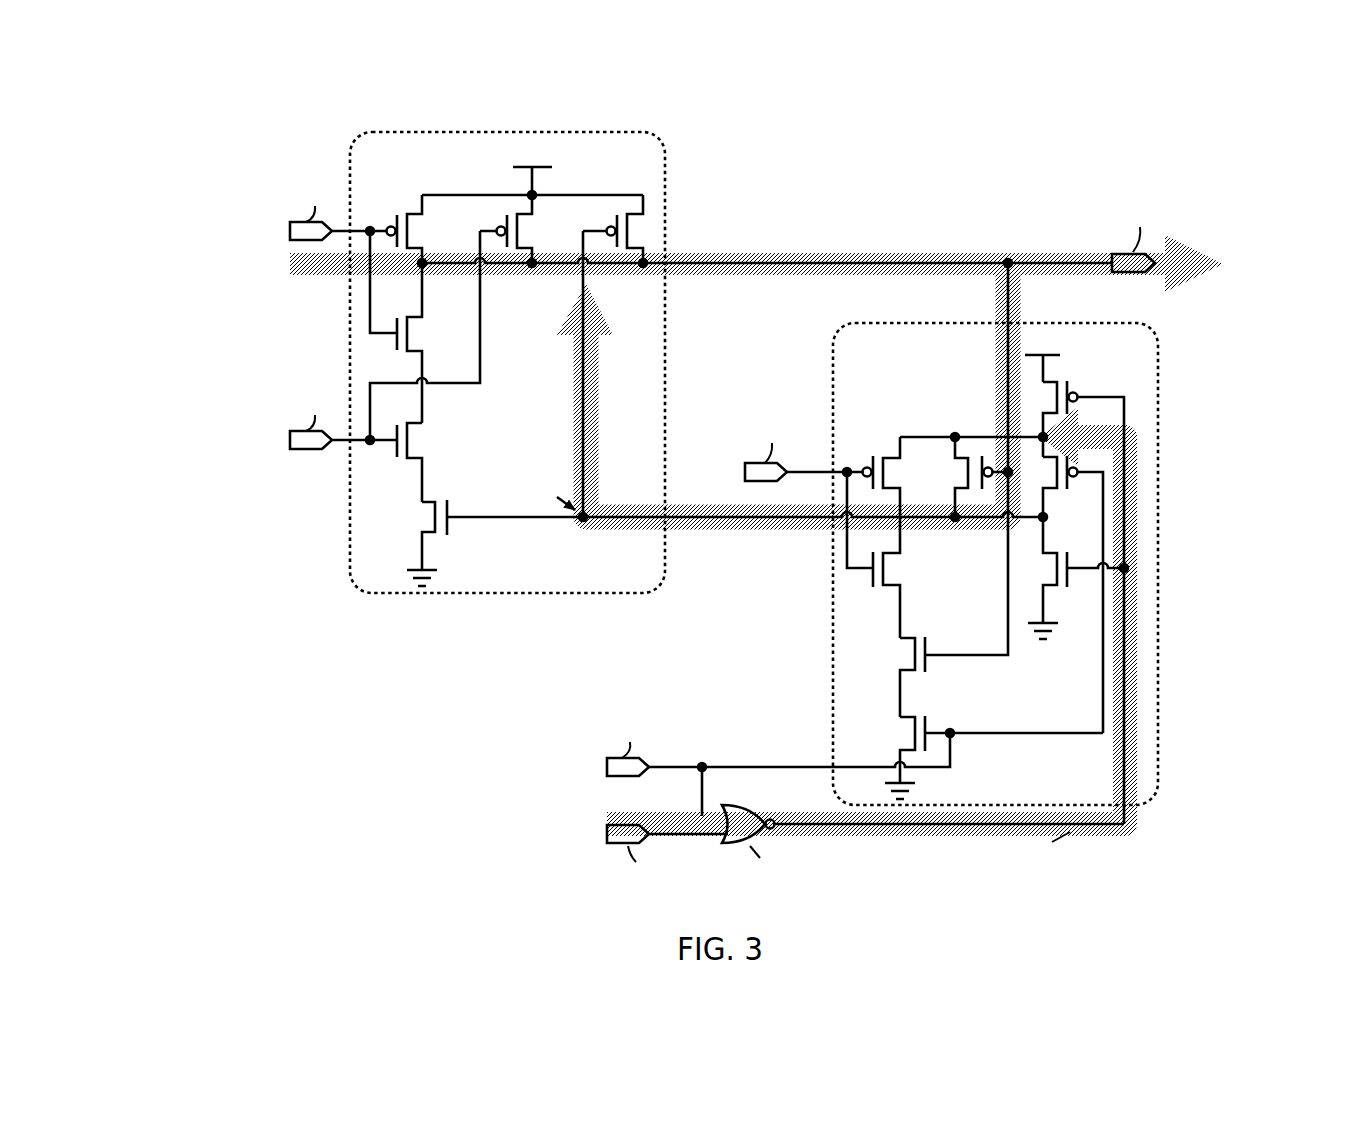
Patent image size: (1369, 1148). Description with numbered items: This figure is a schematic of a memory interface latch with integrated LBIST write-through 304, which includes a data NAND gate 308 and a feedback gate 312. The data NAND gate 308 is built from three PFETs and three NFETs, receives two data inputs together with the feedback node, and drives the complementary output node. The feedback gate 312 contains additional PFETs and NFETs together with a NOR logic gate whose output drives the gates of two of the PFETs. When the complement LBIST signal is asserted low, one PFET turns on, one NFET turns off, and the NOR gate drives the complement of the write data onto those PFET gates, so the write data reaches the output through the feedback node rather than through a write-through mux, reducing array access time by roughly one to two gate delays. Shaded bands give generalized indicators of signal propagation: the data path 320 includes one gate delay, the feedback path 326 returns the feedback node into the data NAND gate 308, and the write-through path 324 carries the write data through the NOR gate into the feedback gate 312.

The memory interface latch with integrated LBIST write-through 304 is at (150, 146).
The data NAND gate 308 is at (417, 600).
The feedback gate 312 is at (1154, 809).
The data path 320 is at (289, 268).
The write-through path 324 is at (605, 818).
The feedback path 326 is at (795, 525).